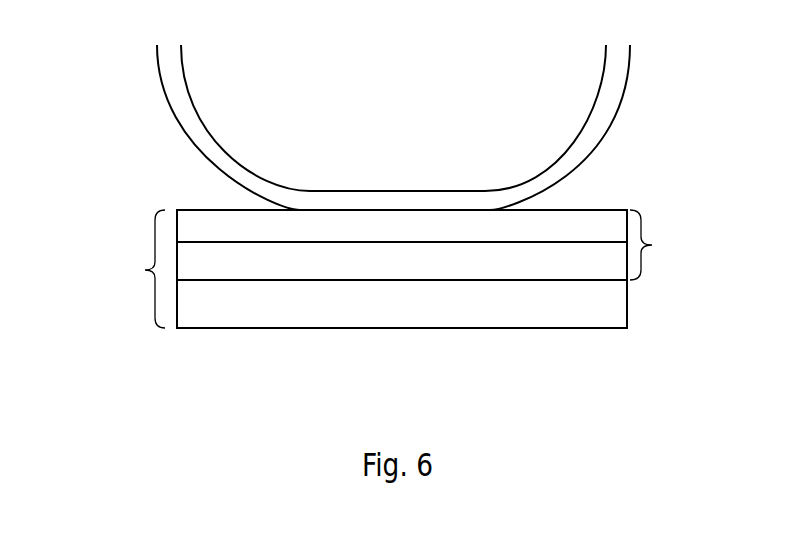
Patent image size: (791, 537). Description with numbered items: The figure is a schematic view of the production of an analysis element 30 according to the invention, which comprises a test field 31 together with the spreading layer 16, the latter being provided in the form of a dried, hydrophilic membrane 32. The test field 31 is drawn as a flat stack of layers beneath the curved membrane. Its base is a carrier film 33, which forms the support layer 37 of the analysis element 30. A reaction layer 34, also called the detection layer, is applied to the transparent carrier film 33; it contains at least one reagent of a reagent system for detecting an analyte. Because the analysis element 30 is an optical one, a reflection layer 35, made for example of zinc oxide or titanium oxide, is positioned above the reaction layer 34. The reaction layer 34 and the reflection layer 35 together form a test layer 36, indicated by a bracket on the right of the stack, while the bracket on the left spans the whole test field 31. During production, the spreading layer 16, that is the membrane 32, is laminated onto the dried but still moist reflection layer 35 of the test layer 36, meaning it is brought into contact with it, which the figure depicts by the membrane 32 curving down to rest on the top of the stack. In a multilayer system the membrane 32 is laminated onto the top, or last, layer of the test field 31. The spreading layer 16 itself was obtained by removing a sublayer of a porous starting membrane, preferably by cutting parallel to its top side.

The spreading layer 16 is at (597, 90).
The hydrophilic membrane 32 is at (615, 77).
The analysis element 30 is at (134, 167).
The test field 31 is at (132, 269).
The test layer 36 is at (661, 245).
The reaction layer 34 is at (607, 261).
The reflection layer 35 is at (215, 233).
The support layer 37 is at (355, 313).
The carrier film 33 is at (513, 312).